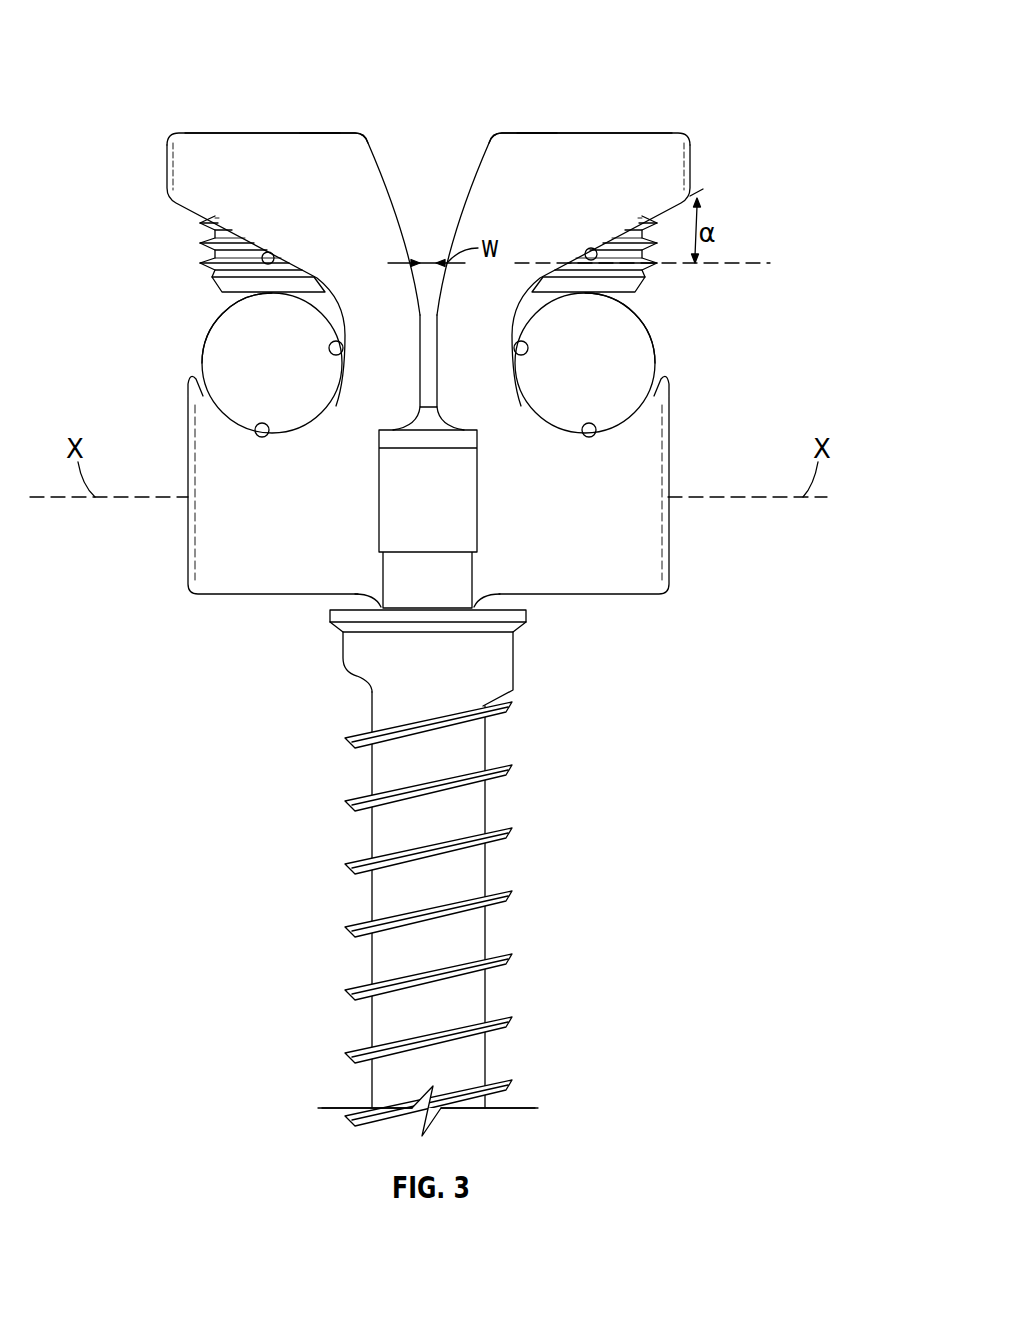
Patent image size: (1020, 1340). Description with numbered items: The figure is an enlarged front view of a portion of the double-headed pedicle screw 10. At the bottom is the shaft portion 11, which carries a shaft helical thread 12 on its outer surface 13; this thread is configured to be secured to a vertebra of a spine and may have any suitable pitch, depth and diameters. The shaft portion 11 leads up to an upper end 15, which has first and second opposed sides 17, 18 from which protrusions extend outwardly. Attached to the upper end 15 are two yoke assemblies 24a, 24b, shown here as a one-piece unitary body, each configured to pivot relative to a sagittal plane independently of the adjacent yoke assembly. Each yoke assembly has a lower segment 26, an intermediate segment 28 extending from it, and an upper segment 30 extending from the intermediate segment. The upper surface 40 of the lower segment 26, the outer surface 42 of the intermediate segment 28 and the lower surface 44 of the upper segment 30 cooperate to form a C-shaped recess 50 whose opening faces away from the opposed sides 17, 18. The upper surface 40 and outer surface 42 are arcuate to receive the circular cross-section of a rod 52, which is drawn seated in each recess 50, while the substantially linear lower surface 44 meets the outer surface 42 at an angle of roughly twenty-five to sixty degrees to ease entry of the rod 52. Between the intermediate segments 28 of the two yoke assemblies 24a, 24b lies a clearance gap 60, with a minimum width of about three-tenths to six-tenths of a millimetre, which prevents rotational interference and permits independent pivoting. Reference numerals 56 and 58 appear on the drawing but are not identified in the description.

The pedicle screw 10 is at (712, 37).
The shaft portion 11 is at (500, 905).
The shaft helical thread 12 is at (347, 1052).
The outer surface 13 is at (487, 995).
The upper end 15 is at (514, 660).
The first opposed side 17 is at (370, 592).
The second opposed side 18 is at (487, 592).
The yoke assembly 24a is at (167, 163).
The yoke assembly 24b is at (690, 163).
The lower segment 26 is at (240, 595).
The intermediate segment 28 is at (383, 345).
The upper segment 30 is at (213, 133).
The upper surface 40 is at (264, 437).
The outer surface 42 is at (343, 350).
The lower surface 44 is at (268, 252).
The recess 50 is at (185, 356).
The rod 52 is at (197, 347).
The upper edge 56 is at (328, 133).
The thread base 58 is at (215, 290).
The clearance gap 60 is at (428, 238).